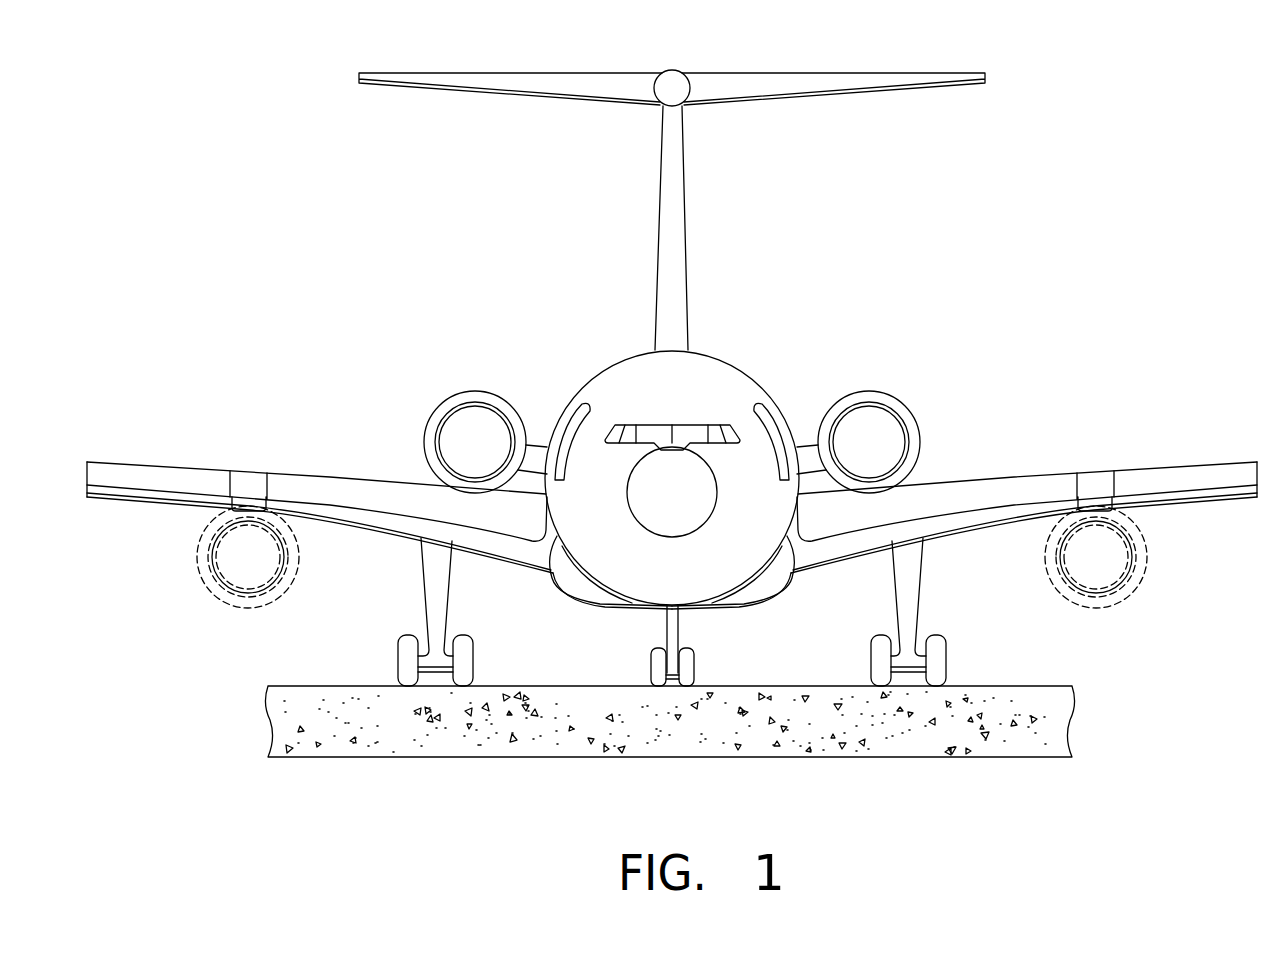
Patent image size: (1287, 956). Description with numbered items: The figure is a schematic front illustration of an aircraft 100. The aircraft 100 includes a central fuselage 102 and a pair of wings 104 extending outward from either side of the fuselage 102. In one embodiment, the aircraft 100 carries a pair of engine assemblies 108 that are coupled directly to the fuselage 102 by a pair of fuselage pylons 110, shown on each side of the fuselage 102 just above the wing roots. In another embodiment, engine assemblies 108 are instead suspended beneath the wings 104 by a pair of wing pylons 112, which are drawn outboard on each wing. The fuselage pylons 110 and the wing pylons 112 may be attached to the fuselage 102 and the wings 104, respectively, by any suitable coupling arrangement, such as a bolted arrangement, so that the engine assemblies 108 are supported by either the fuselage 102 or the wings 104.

The aircraft 100 is at (224, 103).
The fuselage 102 is at (700, 583).
The wings 104 is at (173, 461).
The engine assemblies 108 is at (207, 563).
The fuselage pylons 110 is at (543, 440).
The wing pylons 112 is at (202, 506).